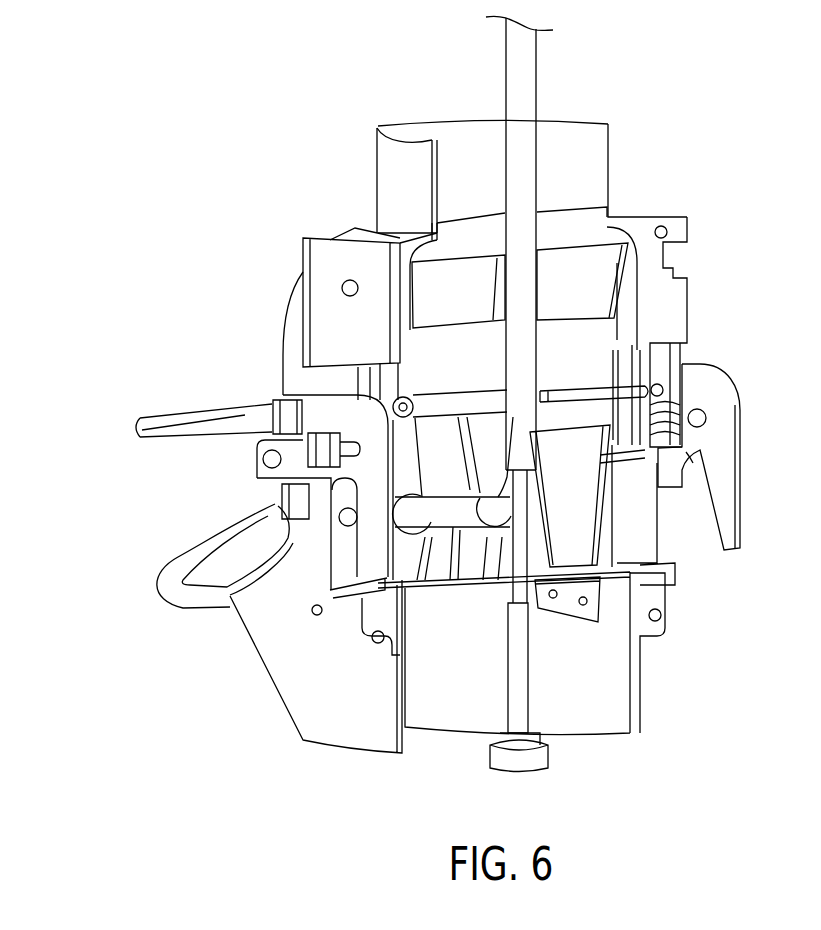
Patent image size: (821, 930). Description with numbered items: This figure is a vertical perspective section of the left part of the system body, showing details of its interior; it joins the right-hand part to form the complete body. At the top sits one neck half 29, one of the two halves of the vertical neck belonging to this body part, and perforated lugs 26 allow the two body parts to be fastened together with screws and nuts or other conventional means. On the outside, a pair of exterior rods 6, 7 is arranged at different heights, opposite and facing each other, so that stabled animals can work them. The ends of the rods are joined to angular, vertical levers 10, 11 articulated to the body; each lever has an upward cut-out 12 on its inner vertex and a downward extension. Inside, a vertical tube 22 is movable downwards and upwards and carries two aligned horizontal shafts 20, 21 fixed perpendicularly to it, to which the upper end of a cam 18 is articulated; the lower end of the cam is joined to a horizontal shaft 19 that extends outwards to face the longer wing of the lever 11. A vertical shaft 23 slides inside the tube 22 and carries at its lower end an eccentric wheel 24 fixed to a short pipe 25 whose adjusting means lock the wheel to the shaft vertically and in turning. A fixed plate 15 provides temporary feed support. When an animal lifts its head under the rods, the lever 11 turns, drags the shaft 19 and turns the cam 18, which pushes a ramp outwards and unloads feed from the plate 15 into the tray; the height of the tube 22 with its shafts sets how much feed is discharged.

The exterior rod 6 is at (142, 420).
The exterior rod 7 is at (170, 590).
The lever 10 is at (727, 500).
The lever 11 is at (376, 545).
The upward cut-out 12 is at (703, 461).
The fixed plate 15 is at (572, 568).
The cam 18 is at (439, 515).
The horizontal shaft 19 is at (343, 517).
The horizontal shaft 20 is at (578, 394).
The horizontal shaft 21 is at (408, 398).
The vertical tube 22 is at (530, 87).
The vertical shaft 23 is at (518, 506).
The eccentric wheel 24 is at (540, 760).
The short pipe 25 is at (515, 680).
The lug 26 is at (668, 217).
The neck half 29 is at (386, 189).